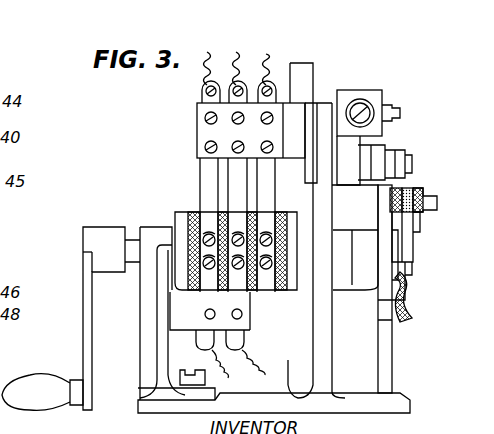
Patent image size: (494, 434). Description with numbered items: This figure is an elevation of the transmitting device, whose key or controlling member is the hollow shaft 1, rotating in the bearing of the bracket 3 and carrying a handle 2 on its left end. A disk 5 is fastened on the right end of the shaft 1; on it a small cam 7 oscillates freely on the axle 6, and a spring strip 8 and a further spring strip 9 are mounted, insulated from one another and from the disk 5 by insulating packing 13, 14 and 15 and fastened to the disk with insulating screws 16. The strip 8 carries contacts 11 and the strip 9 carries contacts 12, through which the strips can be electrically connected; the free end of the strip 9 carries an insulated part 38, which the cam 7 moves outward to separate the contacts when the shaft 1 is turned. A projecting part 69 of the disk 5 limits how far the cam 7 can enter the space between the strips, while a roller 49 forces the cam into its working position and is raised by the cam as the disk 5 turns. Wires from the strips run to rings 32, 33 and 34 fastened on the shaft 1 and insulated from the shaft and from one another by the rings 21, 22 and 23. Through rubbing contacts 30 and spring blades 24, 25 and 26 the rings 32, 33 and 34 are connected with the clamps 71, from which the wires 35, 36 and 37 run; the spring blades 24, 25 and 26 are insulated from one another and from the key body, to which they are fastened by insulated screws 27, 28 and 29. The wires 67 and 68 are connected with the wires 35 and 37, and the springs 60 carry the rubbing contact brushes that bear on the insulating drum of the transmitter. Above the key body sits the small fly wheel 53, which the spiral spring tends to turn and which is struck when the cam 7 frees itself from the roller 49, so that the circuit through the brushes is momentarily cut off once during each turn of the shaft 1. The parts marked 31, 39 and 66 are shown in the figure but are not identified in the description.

The hollow shaft 1 is at (132, 238).
The handle 2 is at (80, 330).
The bracket 3 is at (145, 333).
The disk 5 is at (380, 292).
The axle 6 is at (380, 312).
The cam 7 is at (403, 390).
The spring strip 8 is at (405, 250).
The spring strip 9 is at (418, 246).
The contacts 11 is at (412, 278).
The contacts 12 is at (412, 263).
The insulating packing 13 is at (398, 188).
The insulating packing 14 is at (410, 192).
The insulating packing 15 is at (430, 198).
The insulating screws 16 is at (420, 212).
The insulating ring 21 is at (195, 297).
The insulating ring 22 is at (253, 297).
The insulating ring 23 is at (282, 297).
The spring blade 24 is at (209, 225).
The spring blade 25 is at (237, 225).
The spring blade 26 is at (266, 225).
The insulated screw 27 is at (204, 147).
The insulated screw 28 is at (233, 144).
The insulated screw 29 is at (263, 143).
The rubbing contacts 30 is at (205, 250).
The contact screw 31 is at (210, 238).
The ring 32 is at (209, 292).
The ring 33 is at (238, 292).
The ring 34 is at (268, 292).
The wire 35 is at (203, 59).
The wire 36 is at (238, 59).
The wire 37 is at (274, 60).
The insulated part 38 is at (410, 325).
The housing 39 is at (358, 172).
The roller 49 is at (393, 150).
The fly wheel 53 is at (312, 64).
The springs 60 is at (250, 345).
The clip 66 is at (205, 345).
The wire 67 is at (265, 366).
The wire 68 is at (228, 368).
The projecting part 69 is at (394, 245).
The clamps 71 is at (200, 93).